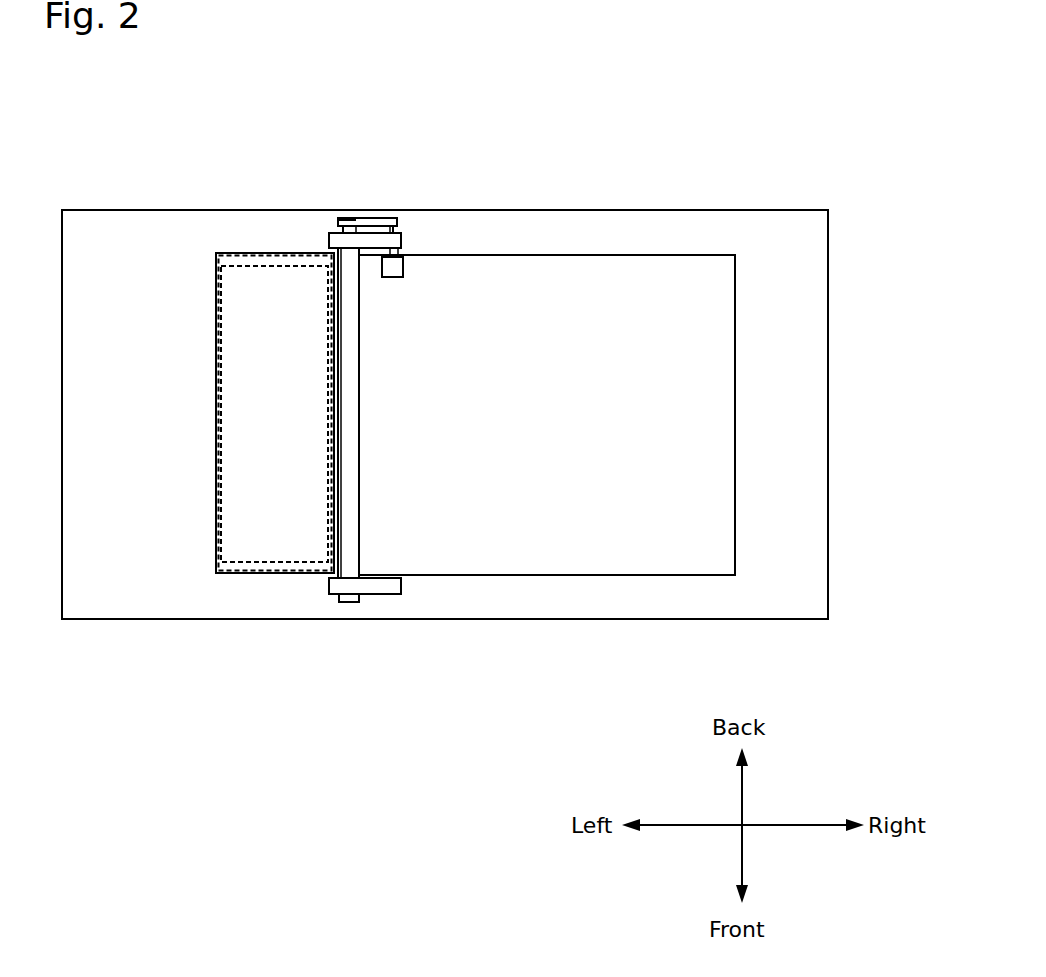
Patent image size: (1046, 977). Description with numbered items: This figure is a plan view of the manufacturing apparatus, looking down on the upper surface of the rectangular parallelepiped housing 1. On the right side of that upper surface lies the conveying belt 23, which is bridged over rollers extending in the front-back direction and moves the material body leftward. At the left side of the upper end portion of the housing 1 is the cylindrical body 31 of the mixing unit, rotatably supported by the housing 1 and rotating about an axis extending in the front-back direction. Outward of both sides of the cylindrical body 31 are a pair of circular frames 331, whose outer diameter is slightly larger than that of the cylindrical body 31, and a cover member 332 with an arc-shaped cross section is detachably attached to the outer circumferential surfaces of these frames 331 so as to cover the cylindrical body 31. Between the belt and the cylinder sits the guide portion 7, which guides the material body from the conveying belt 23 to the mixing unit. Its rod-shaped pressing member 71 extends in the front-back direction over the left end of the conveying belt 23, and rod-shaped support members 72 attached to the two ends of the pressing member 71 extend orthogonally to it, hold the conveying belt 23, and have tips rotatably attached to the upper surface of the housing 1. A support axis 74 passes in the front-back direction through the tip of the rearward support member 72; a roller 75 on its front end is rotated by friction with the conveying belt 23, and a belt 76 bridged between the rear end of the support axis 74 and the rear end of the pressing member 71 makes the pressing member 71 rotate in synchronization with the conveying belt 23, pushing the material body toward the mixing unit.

The housing 1 is at (102, 608).
The conveying belt 23 is at (633, 528).
The cylindrical body 31 is at (230, 318).
The circular frames 331 is at (232, 256).
The cover member 332 is at (216, 413).
The guide portion 7 is at (369, 435).
The pressing member 71 is at (348, 441).
The support members 72 is at (342, 242).
The support axis 74 is at (402, 232).
The roller 75 is at (405, 267).
The belt 76 is at (378, 222).